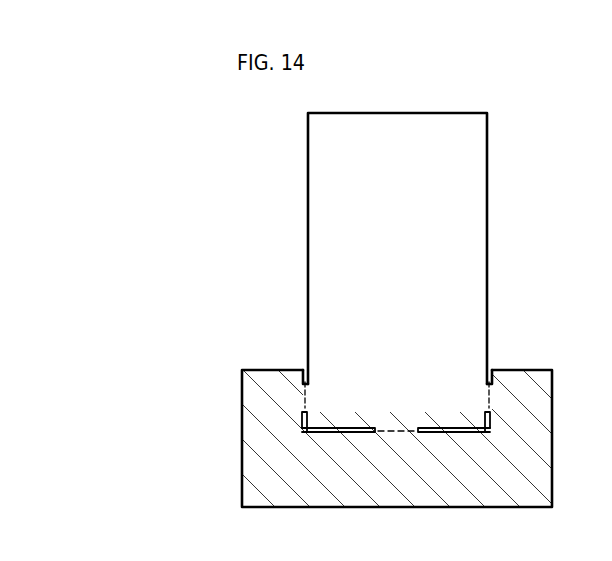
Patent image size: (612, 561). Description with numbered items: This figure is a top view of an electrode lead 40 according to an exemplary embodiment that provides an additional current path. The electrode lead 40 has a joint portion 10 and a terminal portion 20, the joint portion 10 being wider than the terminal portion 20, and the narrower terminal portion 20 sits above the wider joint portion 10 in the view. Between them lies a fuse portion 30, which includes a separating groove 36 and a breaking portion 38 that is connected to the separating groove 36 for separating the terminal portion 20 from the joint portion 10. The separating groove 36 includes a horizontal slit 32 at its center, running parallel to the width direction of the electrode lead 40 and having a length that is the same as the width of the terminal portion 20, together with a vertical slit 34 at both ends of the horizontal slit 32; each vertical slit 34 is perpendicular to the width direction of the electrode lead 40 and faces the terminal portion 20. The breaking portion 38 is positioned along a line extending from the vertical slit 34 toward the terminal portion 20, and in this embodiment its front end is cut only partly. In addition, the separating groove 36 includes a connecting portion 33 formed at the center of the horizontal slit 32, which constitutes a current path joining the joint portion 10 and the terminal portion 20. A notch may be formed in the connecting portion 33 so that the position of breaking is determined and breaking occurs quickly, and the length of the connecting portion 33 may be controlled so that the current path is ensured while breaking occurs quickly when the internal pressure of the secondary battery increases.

The joint portion 10 is at (256, 476).
The terminal portion 20 is at (308, 183).
The fuse portion 30 is at (142, 385).
The horizontal slit 32 is at (330, 434).
The connecting portion 33 is at (393, 432).
The vertical slit 34 is at (302, 416).
The separating groove 36 is at (183, 405).
The breaking portion 38 is at (302, 398).
The electrode lead 40 is at (115, 475).